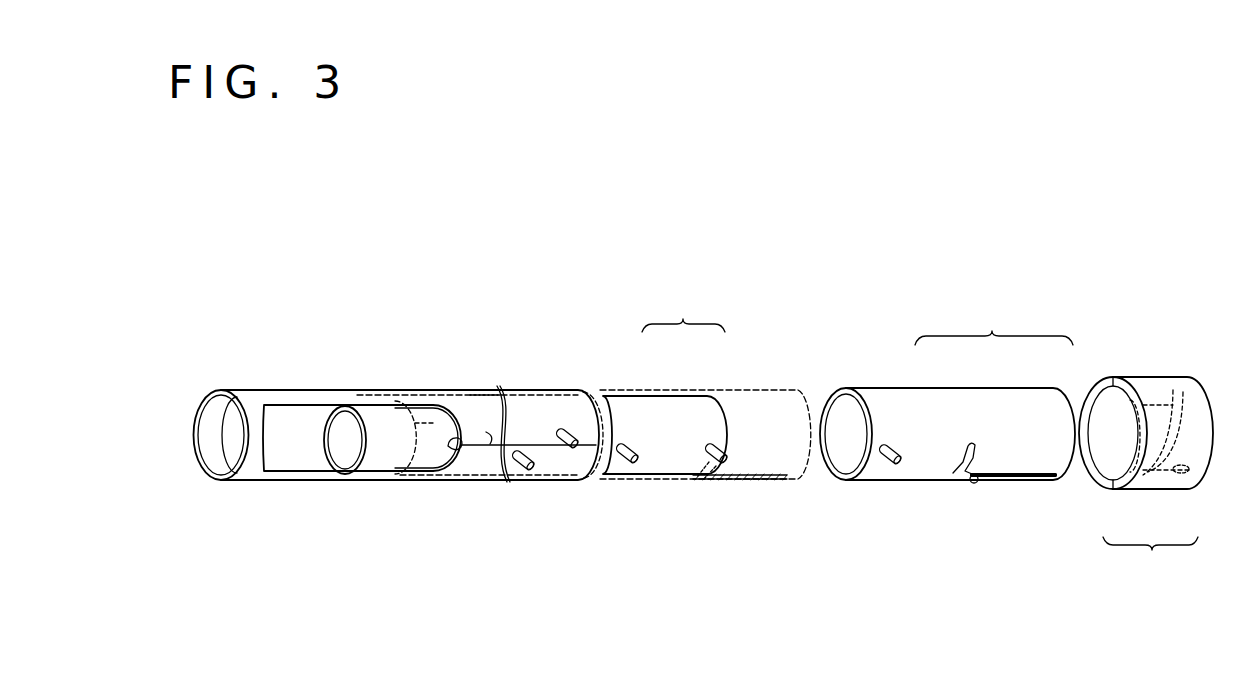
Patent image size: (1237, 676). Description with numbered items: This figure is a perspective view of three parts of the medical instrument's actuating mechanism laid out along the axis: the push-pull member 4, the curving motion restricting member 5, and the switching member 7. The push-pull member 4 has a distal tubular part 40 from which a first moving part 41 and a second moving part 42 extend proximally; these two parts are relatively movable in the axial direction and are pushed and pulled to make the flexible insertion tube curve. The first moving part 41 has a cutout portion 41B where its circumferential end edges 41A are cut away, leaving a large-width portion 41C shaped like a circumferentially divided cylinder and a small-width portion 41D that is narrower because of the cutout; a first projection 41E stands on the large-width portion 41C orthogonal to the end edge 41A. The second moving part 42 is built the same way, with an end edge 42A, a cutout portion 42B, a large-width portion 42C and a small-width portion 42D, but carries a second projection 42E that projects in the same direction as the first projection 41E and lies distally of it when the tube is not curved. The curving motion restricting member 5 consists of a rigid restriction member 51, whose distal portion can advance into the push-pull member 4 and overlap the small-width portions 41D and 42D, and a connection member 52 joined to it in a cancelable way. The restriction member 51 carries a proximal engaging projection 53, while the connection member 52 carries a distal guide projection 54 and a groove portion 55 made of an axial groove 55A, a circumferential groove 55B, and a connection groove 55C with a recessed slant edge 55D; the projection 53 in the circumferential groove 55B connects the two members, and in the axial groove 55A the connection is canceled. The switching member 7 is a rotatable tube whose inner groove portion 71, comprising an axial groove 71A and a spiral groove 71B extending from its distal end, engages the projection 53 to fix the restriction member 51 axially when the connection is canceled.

The push-pull member 4 is at (452, 384).
The tubular part 40 is at (240, 389).
The first moving part 41 is at (547, 389).
The end edge 41A is at (457, 441).
The cutout portion 41B is at (417, 423).
The large-width portion 41C is at (480, 394).
The small-width portion 41D is at (300, 389).
The first projection 41E is at (562, 431).
The second moving part 42 is at (543, 482).
The end edge 42A is at (490, 438).
The cutout portion 42B is at (420, 482).
The large-width portion 42C is at (498, 470).
The small-width portion 42D is at (298, 474).
The second projection 42E is at (518, 468).
The curving motion restricting member 5 is at (683, 312).
The restriction member 51 is at (645, 395).
The connection member 52 is at (713, 389).
The projection 53 is at (730, 456).
The projection 54 is at (621, 460).
The groove portion 55 is at (747, 481).
The axial groove 55A is at (1030, 474).
The circumferential groove 55B is at (970, 445).
The connection groove 55C is at (958, 467).
The slant edge 55D is at (987, 474).
The switching member 7 is at (1158, 368).
The groove portion 71 is at (1150, 556).
The axial groove 71A is at (1183, 477).
The spiral groove 71B is at (1131, 475).